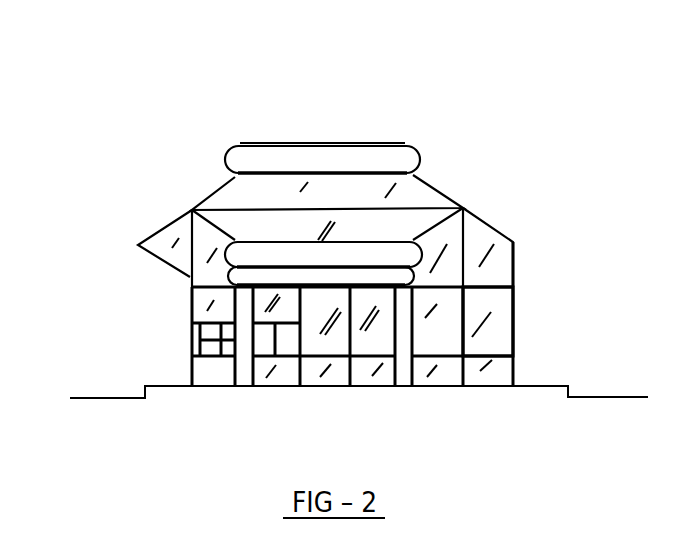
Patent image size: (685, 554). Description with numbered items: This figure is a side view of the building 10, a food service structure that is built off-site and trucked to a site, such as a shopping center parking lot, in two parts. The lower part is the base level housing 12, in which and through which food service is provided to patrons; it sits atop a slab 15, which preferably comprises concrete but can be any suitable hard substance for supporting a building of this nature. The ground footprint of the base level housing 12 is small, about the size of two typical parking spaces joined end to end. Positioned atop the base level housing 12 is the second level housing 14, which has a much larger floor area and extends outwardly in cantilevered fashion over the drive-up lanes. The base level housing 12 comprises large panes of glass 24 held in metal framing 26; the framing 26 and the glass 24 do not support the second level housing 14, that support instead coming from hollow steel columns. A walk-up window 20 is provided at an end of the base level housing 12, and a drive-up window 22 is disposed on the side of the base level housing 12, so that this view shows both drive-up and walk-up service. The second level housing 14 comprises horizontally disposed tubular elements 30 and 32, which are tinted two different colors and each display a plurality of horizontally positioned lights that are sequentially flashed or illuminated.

The building 10 is at (360, 110).
The base level housing 12 is at (538, 350).
The second level housing 14 is at (483, 175).
The slab 15 is at (100, 398).
The walk-up window 20 is at (200, 342).
The drive up window 22 is at (287, 342).
The panes of glass 24 is at (513, 288).
The metal framing 26 is at (513, 325).
The tubular element 30 is at (405, 153).
The tubular element 32 is at (408, 255).